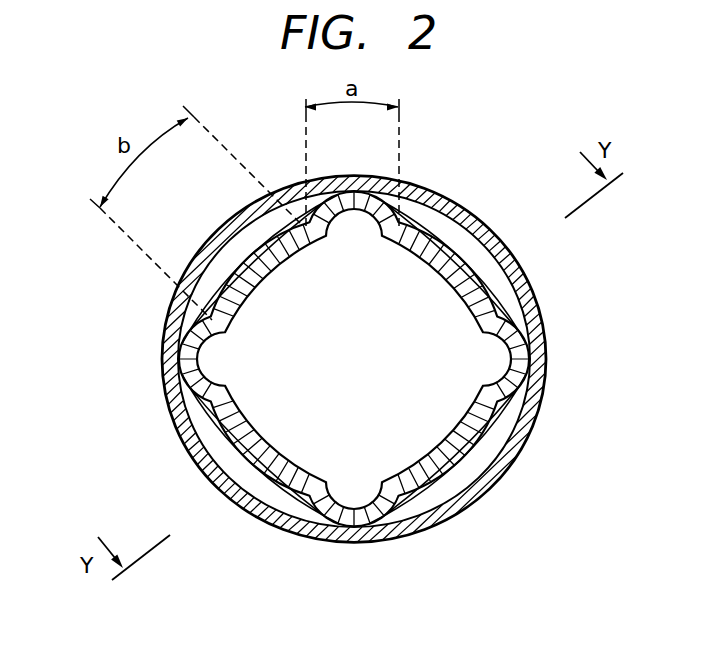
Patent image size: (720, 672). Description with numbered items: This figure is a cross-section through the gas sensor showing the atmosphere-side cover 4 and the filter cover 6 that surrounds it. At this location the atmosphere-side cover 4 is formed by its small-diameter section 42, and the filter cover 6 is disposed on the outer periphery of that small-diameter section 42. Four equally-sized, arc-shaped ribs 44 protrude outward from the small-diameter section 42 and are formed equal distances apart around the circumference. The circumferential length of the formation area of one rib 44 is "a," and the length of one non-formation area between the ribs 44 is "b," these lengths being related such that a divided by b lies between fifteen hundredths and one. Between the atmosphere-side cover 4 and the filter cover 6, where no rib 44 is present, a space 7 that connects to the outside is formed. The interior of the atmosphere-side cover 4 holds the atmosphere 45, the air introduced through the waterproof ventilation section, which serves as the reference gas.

The atmosphere-side cover 4 is at (436, 227).
The filter cover 6 is at (522, 286).
The space 7 is at (205, 425).
The small-diameter section 42 is at (263, 462).
The rib 44 is at (186, 350).
The atmosphere 45 is at (413, 388).